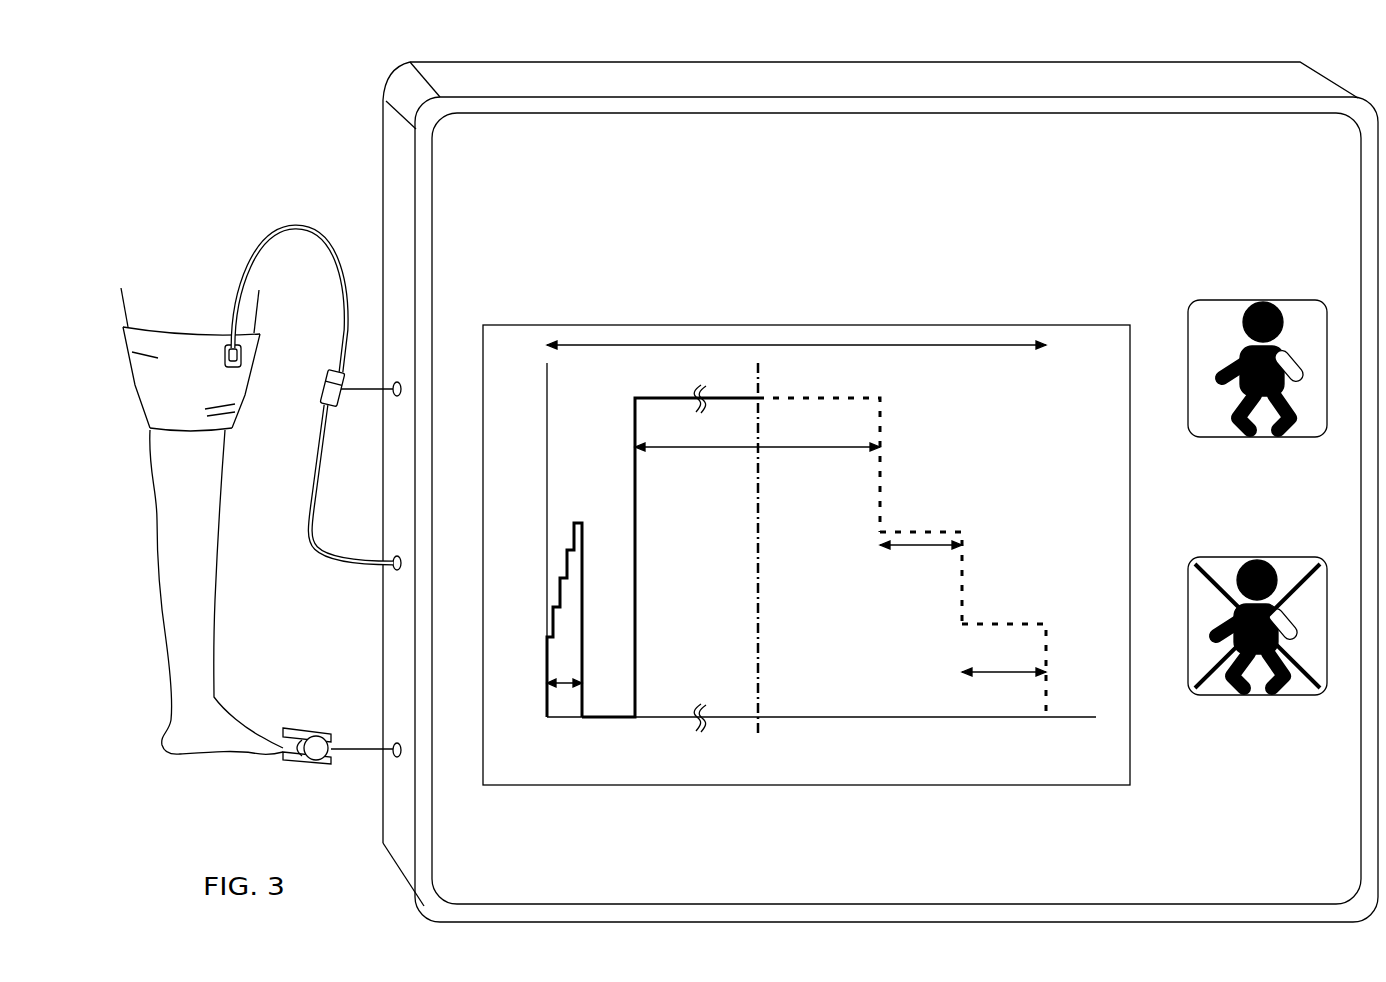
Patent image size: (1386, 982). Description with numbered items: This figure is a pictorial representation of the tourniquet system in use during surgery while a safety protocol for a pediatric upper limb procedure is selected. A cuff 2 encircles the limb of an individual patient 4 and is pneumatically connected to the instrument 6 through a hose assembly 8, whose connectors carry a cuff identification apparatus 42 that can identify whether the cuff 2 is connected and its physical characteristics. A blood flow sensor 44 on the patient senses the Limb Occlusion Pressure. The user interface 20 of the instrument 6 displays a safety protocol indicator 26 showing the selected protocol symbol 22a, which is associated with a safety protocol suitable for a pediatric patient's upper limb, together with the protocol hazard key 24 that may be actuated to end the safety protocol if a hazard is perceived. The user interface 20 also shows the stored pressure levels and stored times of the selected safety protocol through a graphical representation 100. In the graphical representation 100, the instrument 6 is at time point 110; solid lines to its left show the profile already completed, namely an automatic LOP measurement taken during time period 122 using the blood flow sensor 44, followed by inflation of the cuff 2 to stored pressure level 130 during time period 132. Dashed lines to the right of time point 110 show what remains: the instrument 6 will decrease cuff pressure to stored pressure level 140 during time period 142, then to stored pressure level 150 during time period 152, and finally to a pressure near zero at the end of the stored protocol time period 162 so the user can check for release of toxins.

The cuff 2 is at (138, 405).
The individual patient 4 is at (163, 650).
The instrument 6 is at (1213, 72).
The hose assembly 8 is at (295, 225).
The user interface 20 is at (510, 133).
The protocol symbol 22a is at (1266, 316).
The protocol hazard key 24 is at (1233, 697).
The safety protocol indicator 26 is at (1274, 380).
The cuff identification apparatus 42 is at (322, 383).
The blood flow sensor 44 is at (335, 742).
The graphical representation 100 is at (1000, 785).
The time point 110 is at (758, 735).
The time period 122 is at (565, 688).
The stored pressure level 130 is at (836, 396).
The time period 132 is at (757, 459).
The stored pressure level 140 is at (926, 530).
The time period 142 is at (921, 555).
The stored pressure level 150 is at (1003, 624).
The time period 152 is at (1004, 685).
The stored protocol time period 162 is at (796, 356).